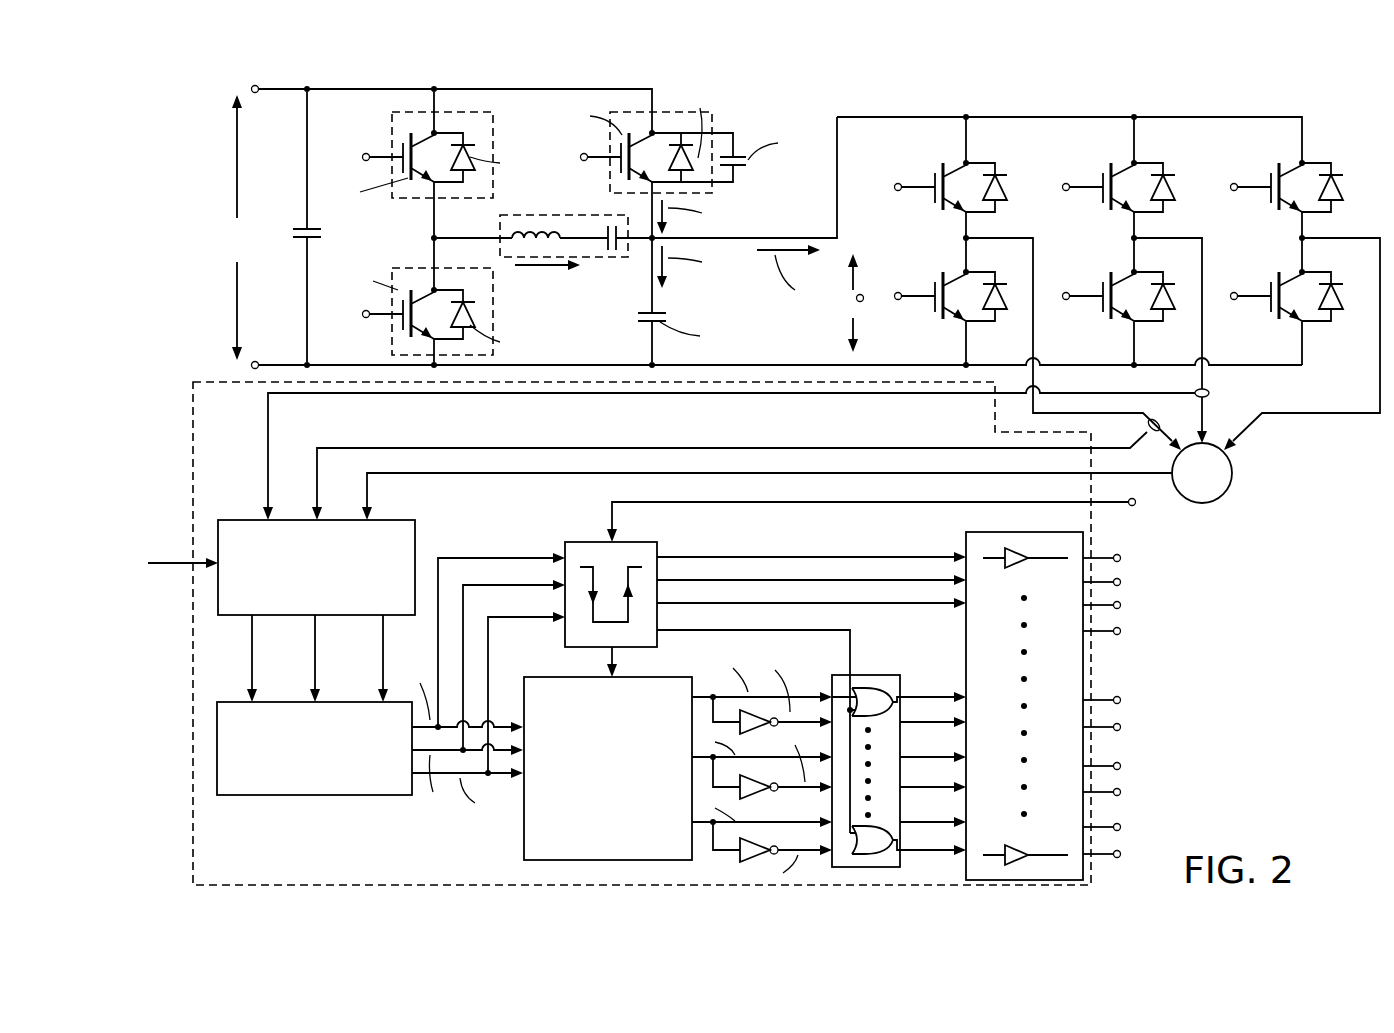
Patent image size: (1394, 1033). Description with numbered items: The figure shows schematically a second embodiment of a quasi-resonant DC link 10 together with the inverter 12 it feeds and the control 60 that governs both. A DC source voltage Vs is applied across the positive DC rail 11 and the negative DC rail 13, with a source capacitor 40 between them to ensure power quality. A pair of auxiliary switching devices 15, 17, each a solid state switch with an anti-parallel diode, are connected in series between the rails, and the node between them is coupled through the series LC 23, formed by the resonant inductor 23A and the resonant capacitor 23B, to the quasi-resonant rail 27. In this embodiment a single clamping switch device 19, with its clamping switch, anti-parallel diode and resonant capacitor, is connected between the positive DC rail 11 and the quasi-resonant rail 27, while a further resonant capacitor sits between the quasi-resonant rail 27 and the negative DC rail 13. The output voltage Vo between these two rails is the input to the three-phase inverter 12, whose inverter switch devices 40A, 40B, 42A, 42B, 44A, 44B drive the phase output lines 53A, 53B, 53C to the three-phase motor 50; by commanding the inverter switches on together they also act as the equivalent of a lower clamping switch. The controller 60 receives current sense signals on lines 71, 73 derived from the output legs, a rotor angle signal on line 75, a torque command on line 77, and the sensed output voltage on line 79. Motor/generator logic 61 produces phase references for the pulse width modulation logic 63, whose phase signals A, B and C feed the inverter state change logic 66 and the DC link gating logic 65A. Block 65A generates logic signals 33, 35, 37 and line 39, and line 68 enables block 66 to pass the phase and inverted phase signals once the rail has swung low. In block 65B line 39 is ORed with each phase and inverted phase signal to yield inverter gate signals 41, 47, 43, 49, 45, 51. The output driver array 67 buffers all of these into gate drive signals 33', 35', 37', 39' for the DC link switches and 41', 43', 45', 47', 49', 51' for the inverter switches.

The DC link 10 is at (214, 134).
The positive DC rail 11 is at (368, 92).
The inverter 12 is at (1232, 105).
The negative DC rail 13 is at (286, 363).
The auxiliary switching device 15 is at (397, 130).
The auxiliary switching device 17 is at (413, 270).
The clamping switch device 19 is at (712, 128).
The series LC 23 is at (543, 238).
The resonant inductor 23A is at (620, 232).
The resonant capacitor 23B is at (535, 228).
The quasi-resonant rail 27 is at (793, 237).
The output signal 33 is at (811, 545).
The gate 33' is at (746, 366).
The output signal 35 is at (811, 556).
The gate 35' is at (750, 458).
The output signal 37 is at (811, 626).
The gate 37' is at (861, 378).
The line 39 is at (753, 652).
The gate drive signal 39' is at (1130, 642).
The source capacitor 40 is at (300, 228).
The inverter switch device 40A is at (957, 160).
The inverter switch device 40B is at (957, 268).
The inverter gate signal 41 is at (933, 667).
The gate 41' is at (1011, 422).
The inverter switch device 42A is at (1125, 160).
The inverter switch device 42B is at (1125, 268).
The inverter gate signal 43 is at (933, 744).
The gate 43' is at (1101, 455).
The inverter switch device 44A is at (1293, 160).
The inverter switch device 44B is at (1293, 268).
The inverter gate signal 45 is at (933, 809).
The gate 45' is at (1177, 486).
The inverter gate signal 47 is at (933, 692).
The gate 47' is at (1023, 488).
The inverter gate signal 49 is at (933, 775).
The gate 49' is at (1109, 520).
The three-phase motor 50 is at (1220, 487).
The inverter gate signal 51 is at (933, 864).
The gate 51' is at (1177, 551).
The phase output line 53A is at (1040, 310).
The phase output line 53B is at (1208, 310).
The phase output line 53C is at (1345, 415).
The controller 60 is at (216, 378).
The motor/generator logic 61 is at (245, 520).
The inverter gating signal generation logic 63 is at (340, 795).
The DC link gating signal generation logic 65A is at (578, 548).
The DC link gating signal generation logic 65B is at (888, 680).
The inverter state change logic 66 is at (535, 843).
The output driver array 67 is at (975, 545).
The enabling signal line 68 is at (605, 648).
The phase reference signal line 71 is at (350, 393).
The phase reference signal line 73 is at (555, 447).
The rotor angle signal line 75 is at (595, 474).
The torque command signal line 77 is at (190, 560).
The voltage sense line 79 is at (1110, 504).